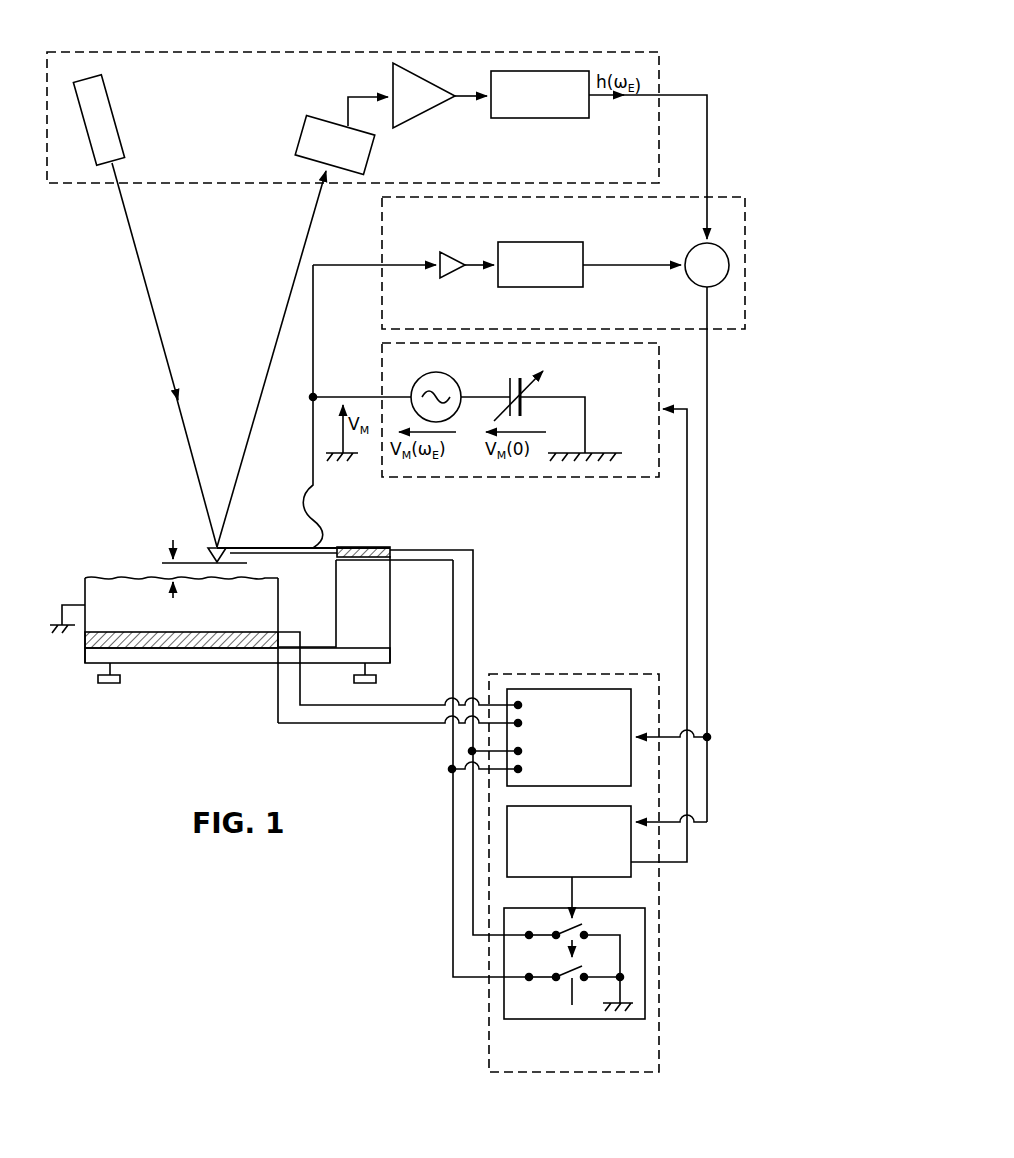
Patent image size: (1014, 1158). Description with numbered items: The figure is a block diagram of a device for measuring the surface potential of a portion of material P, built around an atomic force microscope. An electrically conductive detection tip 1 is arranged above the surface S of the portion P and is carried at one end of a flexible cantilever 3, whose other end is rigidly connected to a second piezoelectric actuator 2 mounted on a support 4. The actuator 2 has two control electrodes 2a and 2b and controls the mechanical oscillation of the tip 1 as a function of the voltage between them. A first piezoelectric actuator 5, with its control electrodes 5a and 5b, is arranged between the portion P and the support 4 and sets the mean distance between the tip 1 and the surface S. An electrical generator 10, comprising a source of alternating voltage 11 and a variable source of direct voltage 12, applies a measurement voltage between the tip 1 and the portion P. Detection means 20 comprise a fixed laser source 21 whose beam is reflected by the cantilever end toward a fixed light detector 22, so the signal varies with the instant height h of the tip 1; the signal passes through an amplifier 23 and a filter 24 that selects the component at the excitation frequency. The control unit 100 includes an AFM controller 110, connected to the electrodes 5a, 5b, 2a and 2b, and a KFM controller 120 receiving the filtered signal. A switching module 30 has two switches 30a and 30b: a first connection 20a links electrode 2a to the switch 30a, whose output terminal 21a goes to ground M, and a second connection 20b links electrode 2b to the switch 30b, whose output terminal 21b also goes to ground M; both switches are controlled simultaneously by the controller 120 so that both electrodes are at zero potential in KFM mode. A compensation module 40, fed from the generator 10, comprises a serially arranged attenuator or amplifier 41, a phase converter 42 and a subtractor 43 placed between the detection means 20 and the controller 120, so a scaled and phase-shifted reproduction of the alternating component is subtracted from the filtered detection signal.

The detection tip 1 is at (212, 557).
The second piezoelectric actuator 2 is at (394, 556).
The control electrode 2a is at (390, 548).
The control electrode 2b is at (395, 560).
The flexible cantilever 3 is at (291, 547).
The support 4 is at (162, 663).
The first piezoelectric actuator 5 is at (218, 648).
The control electrode 5a is at (280, 642).
The control electrode 5b is at (287, 647).
The surface S is at (110, 572).
The portion of material P is at (85, 592).
The instant height h is at (199, 569).
The electrical generator 10 is at (626, 477).
The source of alternating voltage 11 is at (414, 385).
The source of direct voltage 12 is at (506, 380).
The detection means 20 is at (622, 52).
The laser source 21 is at (112, 110).
The light detector 22 is at (299, 134).
The amplifier 23 is at (425, 113).
The filter 24 is at (532, 118).
The compensation module 40 is at (382, 225).
The attenuator or amplifier 41 is at (451, 254).
The phase converter 42 is at (534, 242).
The subtractor 43 is at (692, 250).
The control unit 100 is at (618, 674).
The AFM controller 110 is at (556, 688).
The KFM controller 120 is at (507, 848).
The switching module 30 is at (562, 972).
The switch 30a is at (578, 926).
The switch 30b is at (572, 1005).
The first connection 20a is at (542, 935).
The second connection 20b is at (542, 978).
The output terminal 21a is at (588, 934).
The output terminal 21b is at (590, 968).
The ground M is at (627, 1001).